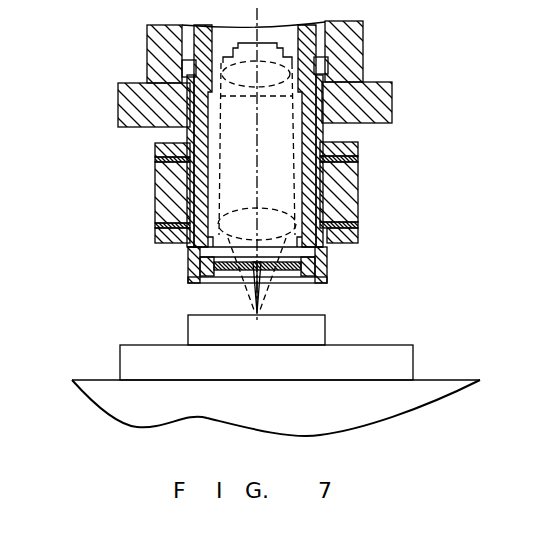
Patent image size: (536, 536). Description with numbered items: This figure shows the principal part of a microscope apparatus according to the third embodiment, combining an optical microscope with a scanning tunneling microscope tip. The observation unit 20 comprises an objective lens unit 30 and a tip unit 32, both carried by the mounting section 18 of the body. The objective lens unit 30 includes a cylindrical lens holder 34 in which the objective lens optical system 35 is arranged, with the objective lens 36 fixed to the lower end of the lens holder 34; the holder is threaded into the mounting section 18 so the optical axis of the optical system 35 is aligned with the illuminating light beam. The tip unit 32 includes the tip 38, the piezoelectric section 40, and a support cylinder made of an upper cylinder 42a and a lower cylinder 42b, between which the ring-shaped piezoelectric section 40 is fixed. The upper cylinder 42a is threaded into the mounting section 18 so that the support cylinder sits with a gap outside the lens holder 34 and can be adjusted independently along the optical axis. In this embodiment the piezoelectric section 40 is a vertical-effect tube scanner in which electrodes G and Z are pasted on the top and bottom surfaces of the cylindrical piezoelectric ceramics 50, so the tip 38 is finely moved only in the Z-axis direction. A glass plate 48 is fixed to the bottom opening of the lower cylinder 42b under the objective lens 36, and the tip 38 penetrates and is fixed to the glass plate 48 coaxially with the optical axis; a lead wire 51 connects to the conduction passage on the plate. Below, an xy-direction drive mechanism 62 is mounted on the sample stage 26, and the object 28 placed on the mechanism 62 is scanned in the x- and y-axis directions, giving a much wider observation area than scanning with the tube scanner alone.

The mounting section 18 is at (345, 64).
The observation unit 20 is at (108, 144).
The objective lens optical system 35 is at (300, 113).
The upper cylinder 42a is at (338, 141).
The electrode G is at (359, 159).
The cylindrical piezoelectric ceramics 50 is at (352, 189).
The objective lens 36 is at (192, 210).
The electrode Z is at (360, 224).
The lower cylinder 42b is at (345, 247).
The piezoelectric section 40 is at (144, 186).
The tip unit 32 is at (138, 246).
The objective lens unit 30 is at (390, 283).
The cylindrical lens holder 34 is at (190, 260).
The glass plate 48 is at (240, 275).
The tip 38 is at (263, 289).
The lead wire 51 is at (327, 322).
The object 28 is at (193, 331).
The xy-direction drive mechanism 62 is at (128, 358).
The sample stage 26 is at (451, 384).